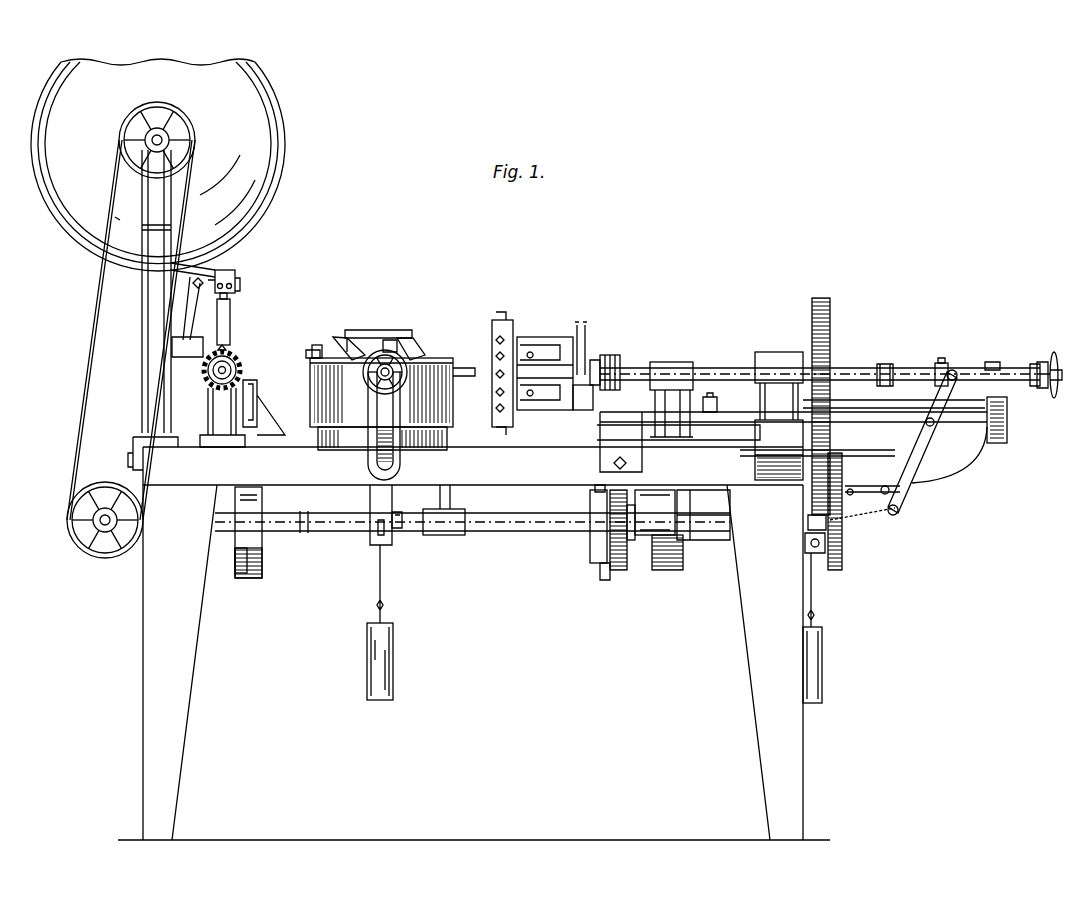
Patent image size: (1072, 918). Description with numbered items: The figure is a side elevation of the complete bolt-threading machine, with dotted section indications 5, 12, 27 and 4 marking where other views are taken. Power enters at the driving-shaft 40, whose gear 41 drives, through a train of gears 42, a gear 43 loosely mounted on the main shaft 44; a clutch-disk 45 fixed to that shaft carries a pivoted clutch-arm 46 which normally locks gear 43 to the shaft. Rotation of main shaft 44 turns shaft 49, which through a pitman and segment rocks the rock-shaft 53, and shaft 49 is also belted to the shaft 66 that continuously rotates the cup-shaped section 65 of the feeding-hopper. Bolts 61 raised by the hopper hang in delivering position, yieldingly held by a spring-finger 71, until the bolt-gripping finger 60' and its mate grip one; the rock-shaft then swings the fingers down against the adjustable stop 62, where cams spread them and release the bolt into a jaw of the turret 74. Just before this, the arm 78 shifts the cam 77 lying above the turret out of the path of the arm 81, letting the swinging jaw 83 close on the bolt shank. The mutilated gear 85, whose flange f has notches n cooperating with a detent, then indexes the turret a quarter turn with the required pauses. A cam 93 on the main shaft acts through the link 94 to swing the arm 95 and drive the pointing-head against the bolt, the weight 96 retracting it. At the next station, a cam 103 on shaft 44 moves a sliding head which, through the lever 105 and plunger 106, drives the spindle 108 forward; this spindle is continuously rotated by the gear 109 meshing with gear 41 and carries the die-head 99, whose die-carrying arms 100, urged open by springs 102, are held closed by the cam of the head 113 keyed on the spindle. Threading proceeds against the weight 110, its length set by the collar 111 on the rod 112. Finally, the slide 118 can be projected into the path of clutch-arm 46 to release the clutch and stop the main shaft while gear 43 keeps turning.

The rotating cup-shaped section 65 is at (245, 117).
The shaft 66 is at (150, 140).
The shaft 49 is at (105, 528).
The spring-finger 71 is at (236, 272).
The bolt 61 is at (232, 297).
The bolt-gripping finger 60' is at (243, 322).
The rock-shaft 53 is at (240, 366).
The adjustable stop 62 is at (258, 385).
The dotted line 12 12 is at (60, 297).
The dotted line 5 5 is at (15, 555).
The turret 74 is at (390, 400).
The swinging jaw 83 is at (311, 366).
The cam 77 is at (378, 335).
The arm 81 is at (342, 345).
The arm 95 is at (368, 464).
The arm 78 is at (370, 504).
The cam 93 is at (402, 512).
The weight 96 is at (394, 686).
The main shaft 44 is at (318, 520).
The link 94 is at (405, 535).
The flange f is at (248, 532).
The mutilated gear 85 is at (255, 580).
The notch n is at (238, 556).
The clutch-arm 46 is at (606, 580).
The clutch-disk 45 is at (604, 548).
The gear 43 is at (624, 572).
The slide 118 is at (706, 540).
The cam 103 is at (673, 570).
The dotted line 27 27 is at (570, 262).
The die-head 99 is at (545, 345).
The spring 102 is at (581, 340).
The die-carrying arm 100 is at (578, 405).
The head 113 is at (624, 355).
The spindle 108 is at (720, 370).
The rod 112 is at (657, 362).
The driving-shaft 40 is at (676, 426).
The collar 111 is at (710, 430).
The gear 41 is at (832, 412).
The gear 109 is at (831, 305).
The train of gears 42 is at (843, 545).
The weight 110 is at (826, 690).
The plunger 106 is at (919, 376).
The lever 105 is at (945, 385).
The dotted line 4 4 is at (1008, 612).